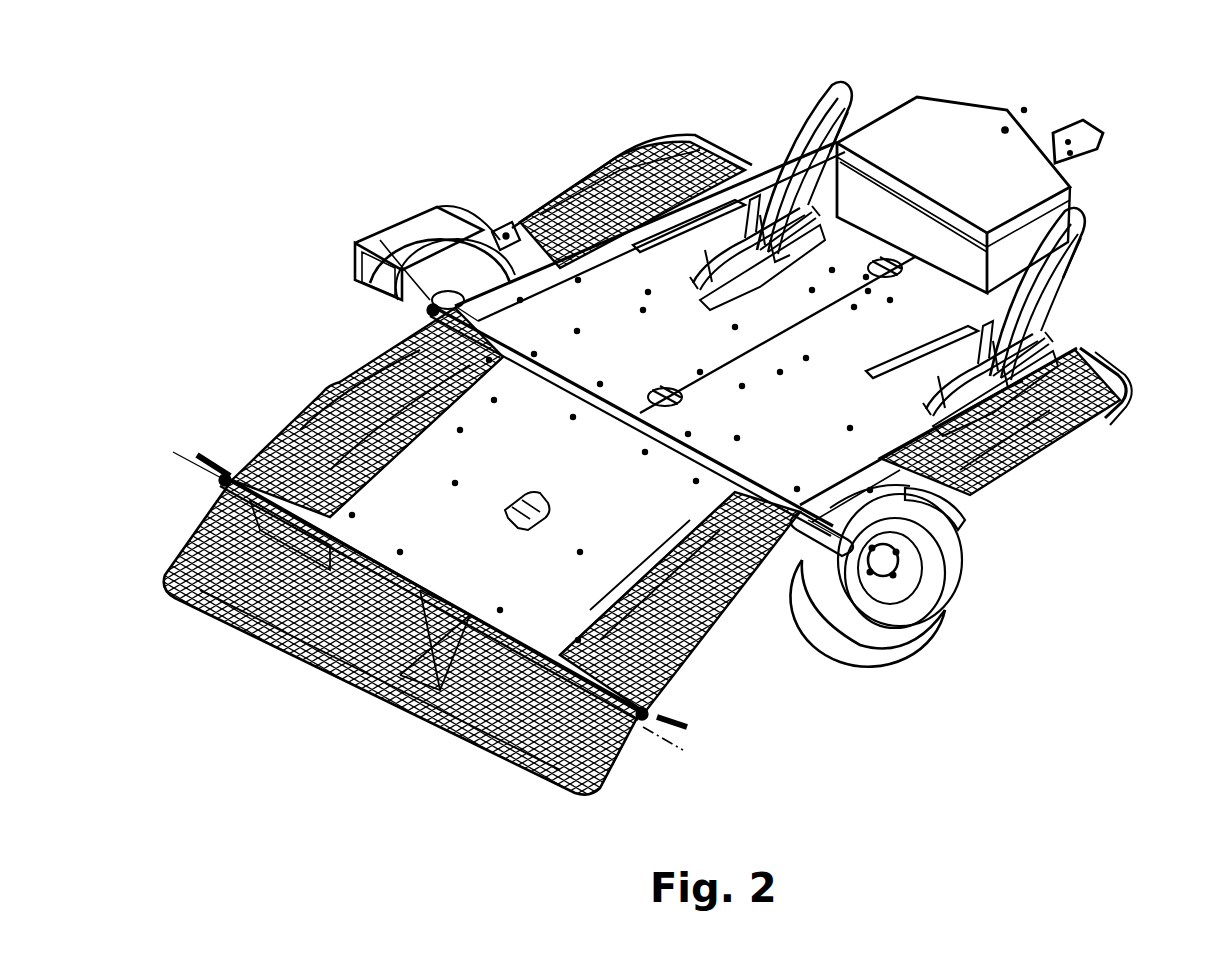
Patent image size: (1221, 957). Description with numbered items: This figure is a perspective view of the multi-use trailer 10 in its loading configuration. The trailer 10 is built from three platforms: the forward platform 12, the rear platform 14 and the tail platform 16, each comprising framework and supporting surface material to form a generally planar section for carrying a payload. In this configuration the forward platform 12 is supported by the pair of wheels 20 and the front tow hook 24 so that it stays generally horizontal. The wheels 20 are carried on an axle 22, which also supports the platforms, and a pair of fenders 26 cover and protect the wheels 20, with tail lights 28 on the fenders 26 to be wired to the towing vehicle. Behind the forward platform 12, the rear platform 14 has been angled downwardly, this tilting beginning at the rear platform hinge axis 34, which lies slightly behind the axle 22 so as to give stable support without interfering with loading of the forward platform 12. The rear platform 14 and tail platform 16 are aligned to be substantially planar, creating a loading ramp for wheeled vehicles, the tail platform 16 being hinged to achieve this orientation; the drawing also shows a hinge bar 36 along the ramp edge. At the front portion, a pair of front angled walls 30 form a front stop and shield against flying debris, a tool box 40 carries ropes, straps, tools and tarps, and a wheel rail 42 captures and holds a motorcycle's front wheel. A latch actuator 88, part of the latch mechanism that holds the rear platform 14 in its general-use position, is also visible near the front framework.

The multi-use trailer 10 is at (774, 700).
The forward platform 12 is at (818, 455).
The rear platform 14 is at (545, 593).
The tail platform 16 is at (600, 760).
The wheels 20 is at (917, 558).
The axle 22 is at (900, 566).
The tow hook 24 is at (1095, 122).
The fenders 26 is at (1000, 478).
The tail lights 28 is at (826, 545).
The front angled walls 30 is at (1080, 290).
The rear platform hinge axis 34 is at (697, 450).
The ramp edge bar 36 is at (683, 737).
The tool box 40 is at (975, 100).
The wheel rail 42 is at (762, 168).
The latch actuator 88 is at (503, 228).